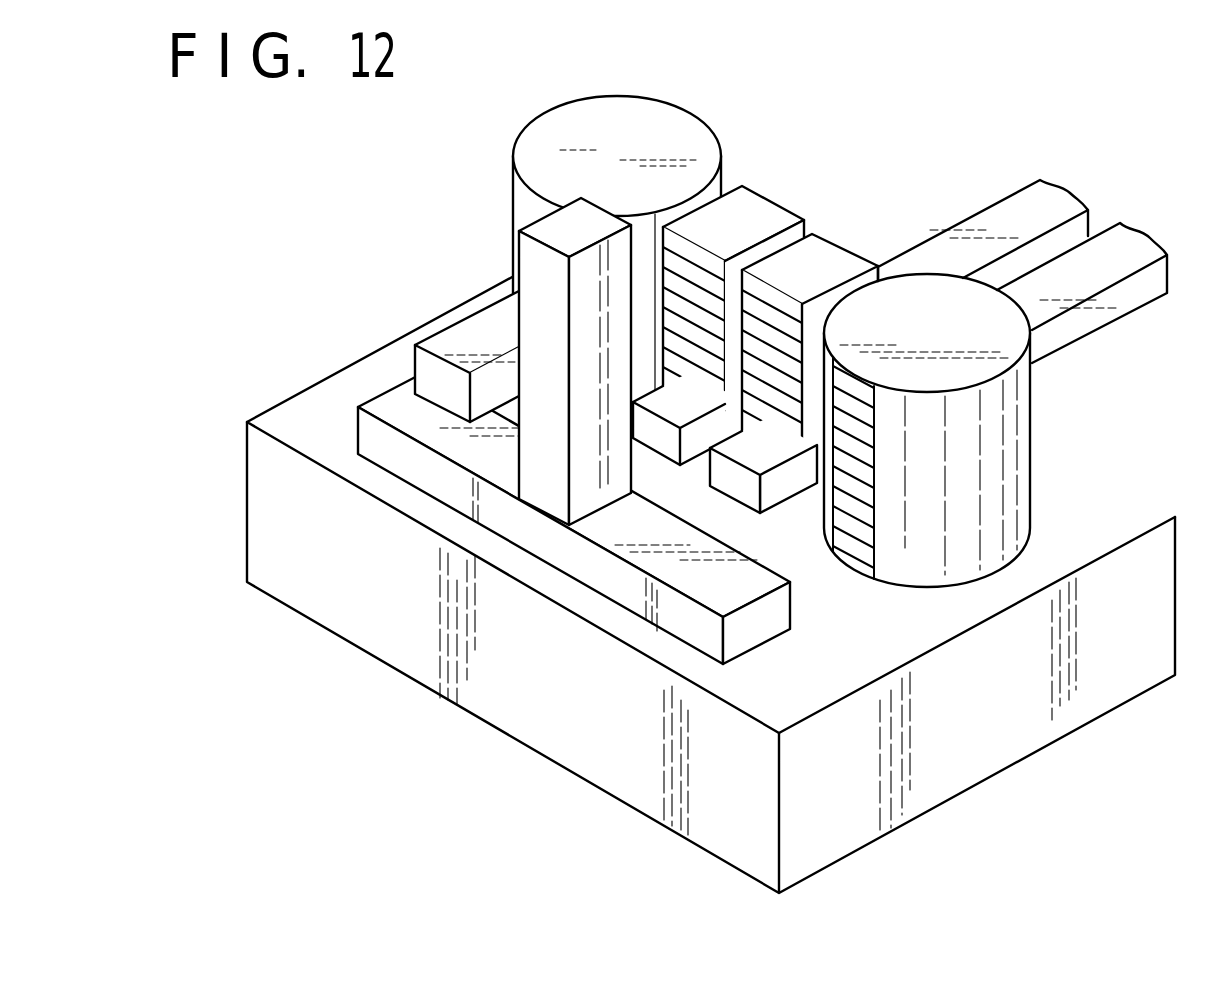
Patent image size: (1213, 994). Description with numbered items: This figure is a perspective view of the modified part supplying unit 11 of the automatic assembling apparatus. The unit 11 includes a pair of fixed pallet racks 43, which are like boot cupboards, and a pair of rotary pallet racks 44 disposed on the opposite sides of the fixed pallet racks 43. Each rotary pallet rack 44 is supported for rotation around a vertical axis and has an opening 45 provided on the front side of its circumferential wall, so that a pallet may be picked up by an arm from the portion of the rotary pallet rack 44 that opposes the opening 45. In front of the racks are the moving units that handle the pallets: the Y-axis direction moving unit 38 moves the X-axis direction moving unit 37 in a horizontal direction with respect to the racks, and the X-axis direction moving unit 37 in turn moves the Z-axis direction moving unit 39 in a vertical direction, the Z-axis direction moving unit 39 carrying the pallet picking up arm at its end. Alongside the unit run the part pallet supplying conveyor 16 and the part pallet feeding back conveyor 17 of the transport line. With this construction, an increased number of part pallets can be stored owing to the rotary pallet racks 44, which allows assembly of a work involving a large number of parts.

The part supplying unit 11 is at (383, 679).
The part pallet supplying conveyor 16 is at (1127, 262).
The part pallet feeding back conveyor 17 is at (948, 237).
The X-axis direction moving unit 37 is at (542, 302).
The Y-axis direction moving unit 38 is at (718, 598).
The Z-axis direction moving unit 39 is at (447, 342).
The fixed pallet racks 43 is at (824, 247).
The rotary pallet racks 44 is at (690, 135).
The opening 45 is at (872, 525).